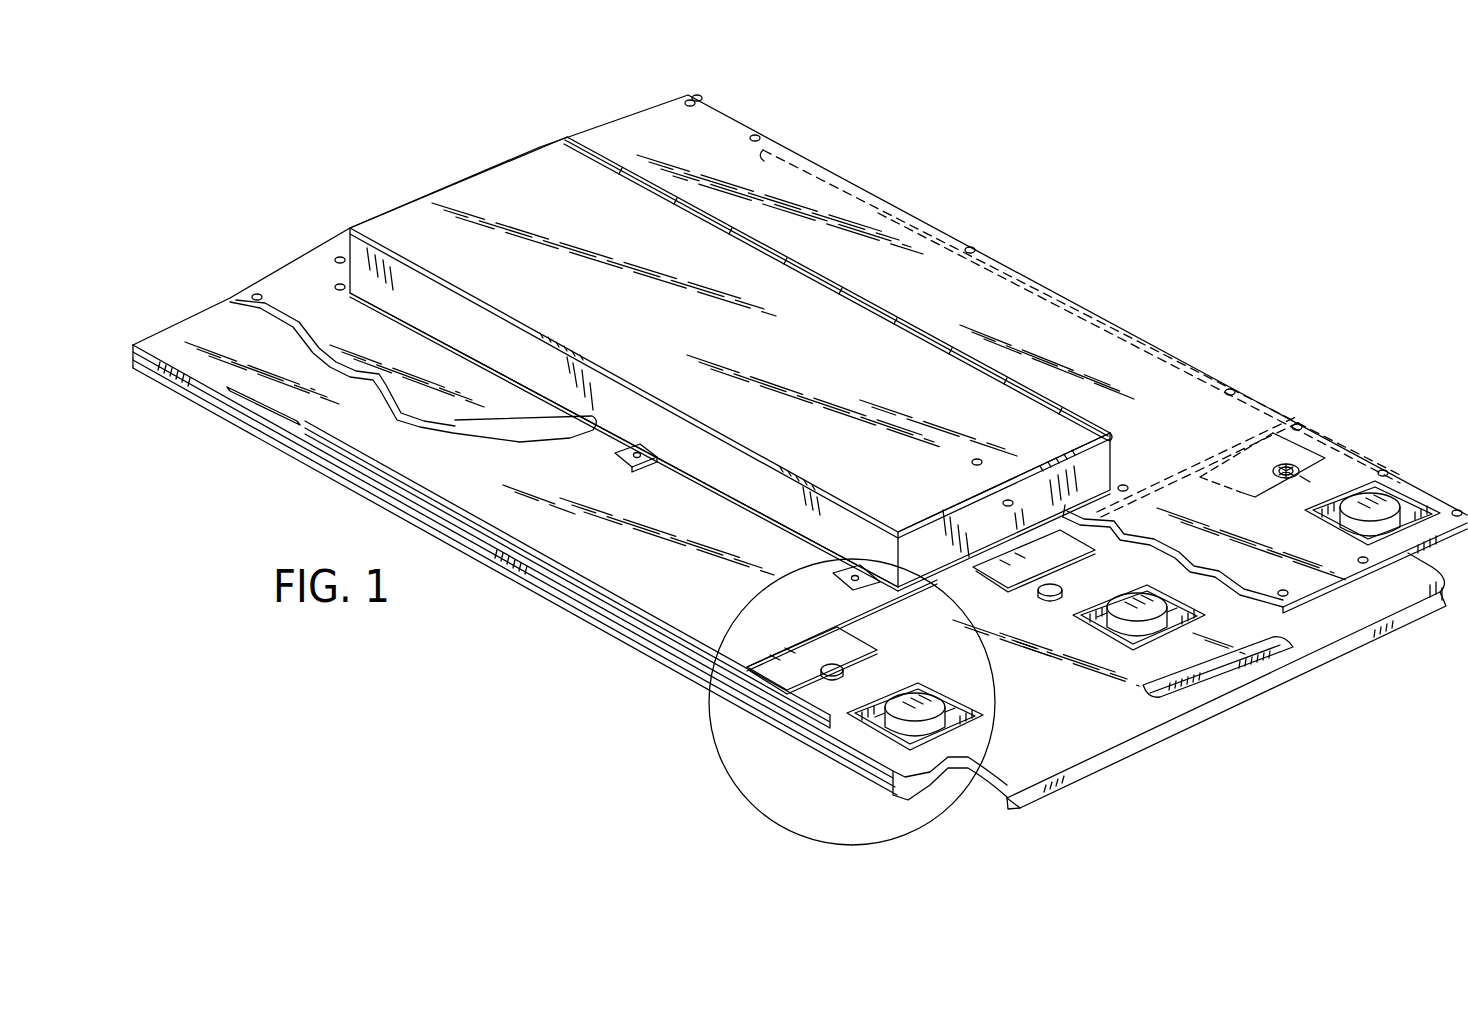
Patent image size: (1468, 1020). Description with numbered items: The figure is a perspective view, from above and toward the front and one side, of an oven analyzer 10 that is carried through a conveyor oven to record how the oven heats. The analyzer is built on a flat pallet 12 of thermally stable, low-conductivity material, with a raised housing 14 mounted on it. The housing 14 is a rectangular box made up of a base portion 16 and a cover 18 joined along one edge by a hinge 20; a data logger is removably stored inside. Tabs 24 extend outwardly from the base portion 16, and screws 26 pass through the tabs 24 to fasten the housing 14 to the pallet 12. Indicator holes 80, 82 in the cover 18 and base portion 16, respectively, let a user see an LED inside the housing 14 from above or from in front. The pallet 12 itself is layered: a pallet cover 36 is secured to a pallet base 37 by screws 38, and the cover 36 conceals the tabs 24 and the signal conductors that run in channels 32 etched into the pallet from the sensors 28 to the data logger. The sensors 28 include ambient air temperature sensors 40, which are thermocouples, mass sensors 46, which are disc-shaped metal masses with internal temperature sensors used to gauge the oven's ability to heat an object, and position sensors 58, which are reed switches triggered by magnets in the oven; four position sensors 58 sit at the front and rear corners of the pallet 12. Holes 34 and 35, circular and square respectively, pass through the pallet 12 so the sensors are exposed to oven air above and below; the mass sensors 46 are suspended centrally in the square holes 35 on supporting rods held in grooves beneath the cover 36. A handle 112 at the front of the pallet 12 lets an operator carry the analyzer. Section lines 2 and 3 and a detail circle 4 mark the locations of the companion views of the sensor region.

The oven analyzer 10 is at (926, 175).
The pallet 12 is at (620, 570).
The housing 14 is at (513, 188).
The base portion 16 is at (745, 482).
The cover 18 is at (725, 337).
The hinge 20 is at (615, 158).
The tabs 24 is at (612, 462).
The screws 26 is at (652, 478).
The sensors 28 is at (1364, 430).
The channels 32 is at (960, 580).
The holes 34 is at (1305, 475).
The holes 35 is at (1408, 515).
The cover 36 is at (478, 417).
The pallet base 37 is at (1333, 655).
The screws 38 is at (700, 96).
The ambient air temperature sensors 40 is at (1290, 485).
The mass sensors 46 is at (927, 742).
The position sensors 58 is at (806, 158).
The indicator hole 80 is at (975, 462).
The indicator hole 82 is at (1012, 501).
The handle 112 is at (1215, 674).
The section line 2 is at (892, 621).
The section line 3 is at (972, 667).
The detail view circle 4 is at (717, 768).